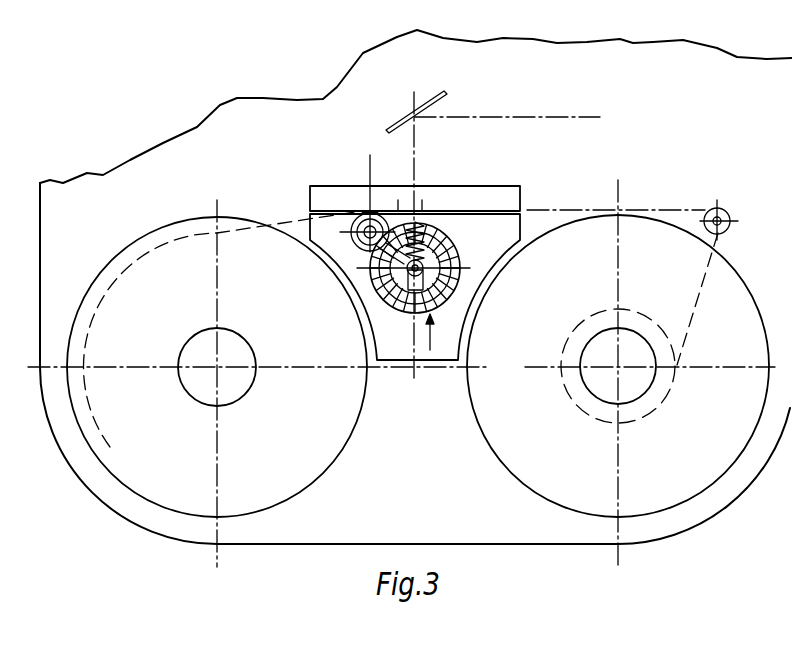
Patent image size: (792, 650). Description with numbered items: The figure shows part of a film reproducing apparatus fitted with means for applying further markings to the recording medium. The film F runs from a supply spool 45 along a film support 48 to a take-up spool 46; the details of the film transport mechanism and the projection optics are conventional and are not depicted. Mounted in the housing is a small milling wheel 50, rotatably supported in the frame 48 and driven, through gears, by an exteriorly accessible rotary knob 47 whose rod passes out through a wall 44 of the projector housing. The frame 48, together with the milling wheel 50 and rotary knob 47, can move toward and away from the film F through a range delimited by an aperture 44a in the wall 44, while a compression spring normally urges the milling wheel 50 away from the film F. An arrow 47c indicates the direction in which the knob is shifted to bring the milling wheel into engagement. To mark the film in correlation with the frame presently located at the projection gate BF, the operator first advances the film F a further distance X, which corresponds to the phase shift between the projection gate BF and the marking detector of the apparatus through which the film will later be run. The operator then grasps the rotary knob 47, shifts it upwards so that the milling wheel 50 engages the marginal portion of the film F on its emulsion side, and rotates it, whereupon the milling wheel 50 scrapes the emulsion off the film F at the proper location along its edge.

The wall of the projector housing 44 is at (447, 350).
The aperture 44a is at (423, 283).
The supply spool 45 is at (737, 293).
The take-up spool 46 is at (126, 293).
The rotary knob 47 is at (458, 253).
The direction arrow of wheel movement 47c is at (432, 342).
The film support 48 is at (485, 191).
The milling wheel 50 is at (352, 220).
The film F is at (300, 217).
The projection gate BF is at (426, 210).
The distance X is at (447, 161).